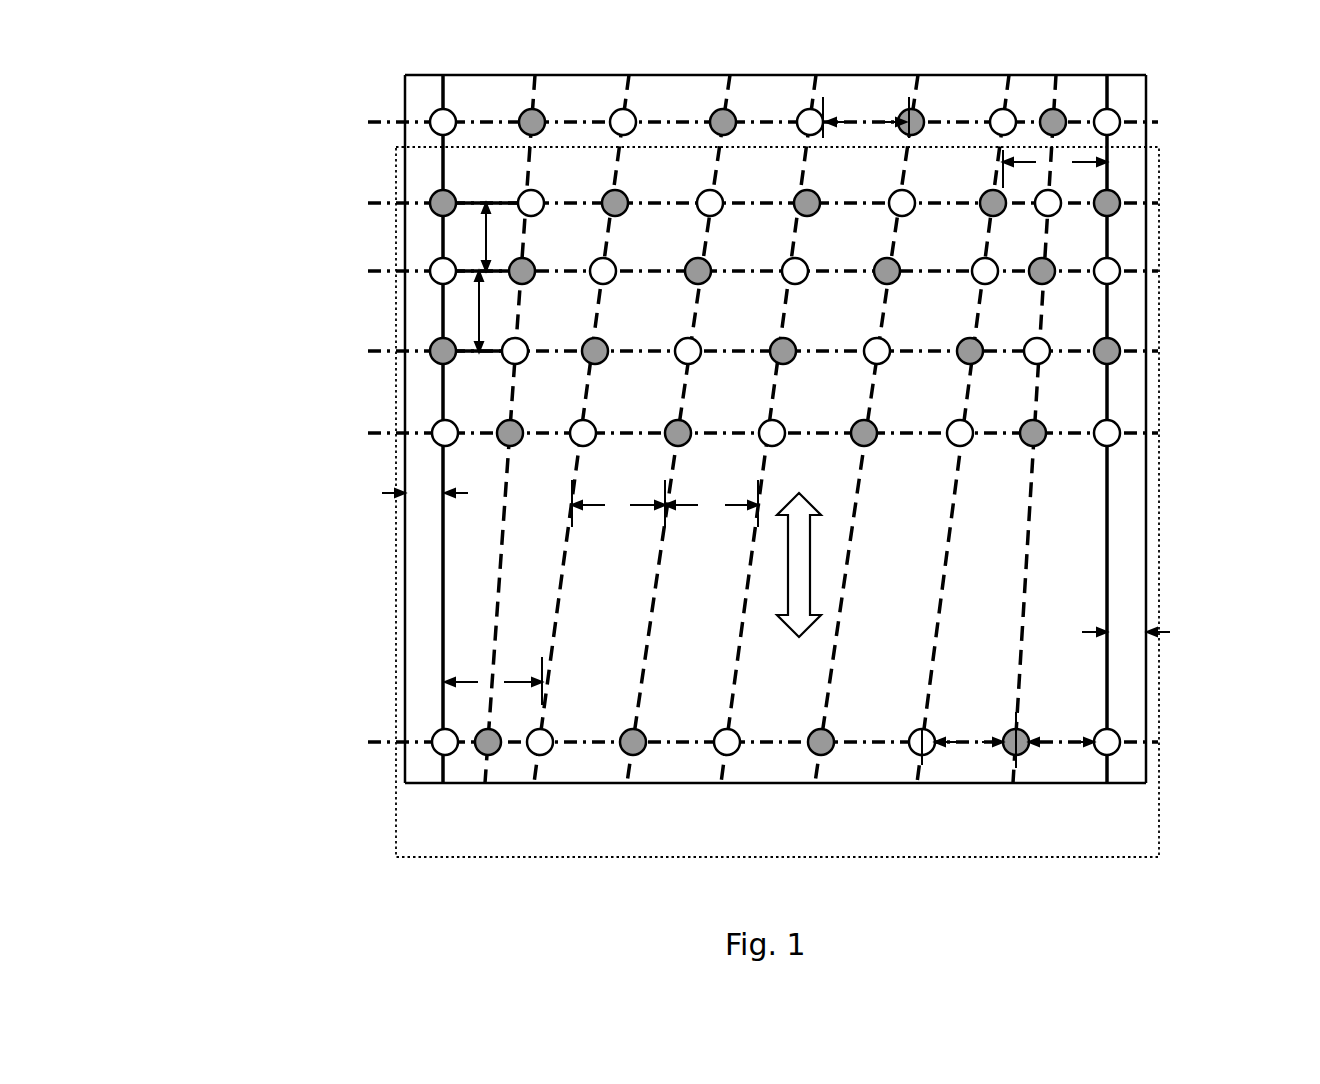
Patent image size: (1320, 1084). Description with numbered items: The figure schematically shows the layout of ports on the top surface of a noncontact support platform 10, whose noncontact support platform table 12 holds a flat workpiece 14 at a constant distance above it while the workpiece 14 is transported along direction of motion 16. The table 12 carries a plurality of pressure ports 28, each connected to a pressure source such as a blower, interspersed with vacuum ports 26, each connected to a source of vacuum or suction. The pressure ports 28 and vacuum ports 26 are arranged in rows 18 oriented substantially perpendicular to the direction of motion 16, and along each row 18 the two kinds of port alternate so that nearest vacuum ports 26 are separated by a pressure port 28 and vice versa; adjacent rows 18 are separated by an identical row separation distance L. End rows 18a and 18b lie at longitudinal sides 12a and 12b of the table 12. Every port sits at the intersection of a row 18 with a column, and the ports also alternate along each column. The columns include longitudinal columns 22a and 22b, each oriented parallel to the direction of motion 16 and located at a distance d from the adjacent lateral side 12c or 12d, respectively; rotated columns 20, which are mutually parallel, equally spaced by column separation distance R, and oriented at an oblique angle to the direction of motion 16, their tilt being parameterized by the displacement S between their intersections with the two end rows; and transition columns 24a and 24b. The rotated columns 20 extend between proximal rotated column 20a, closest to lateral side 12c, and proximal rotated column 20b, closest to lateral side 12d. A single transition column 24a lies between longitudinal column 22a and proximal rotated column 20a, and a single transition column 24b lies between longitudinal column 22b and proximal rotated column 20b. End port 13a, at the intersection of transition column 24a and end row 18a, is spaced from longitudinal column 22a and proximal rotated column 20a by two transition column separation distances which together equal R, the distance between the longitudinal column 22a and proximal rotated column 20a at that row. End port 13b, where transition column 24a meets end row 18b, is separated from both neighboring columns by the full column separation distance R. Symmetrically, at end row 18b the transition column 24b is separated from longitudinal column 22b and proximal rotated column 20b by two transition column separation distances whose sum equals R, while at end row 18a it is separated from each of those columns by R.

The noncontact support platform 10 is at (230, 397).
The noncontact support platform table 12 is at (791, 451).
The longitudinal side 12a is at (1083, 75).
The longitudinal side 12b is at (862, 784).
The lateral side 12c is at (1146, 233).
The lateral side 12d is at (443, 318).
The end port 13a is at (1050, 110).
The end port 13b is at (1020, 750).
The workpiece 14 is at (398, 560).
The direction of motion 16 is at (810, 540).
The rows 18 is at (392, 272).
The end row 18a is at (397, 122).
The end row 18b is at (393, 742).
The rotated columns 20 is at (816, 780).
The proximal rotated column 20a is at (930, 664).
The proximal rotated column 20b is at (560, 612).
The longitudinal column 22a is at (1107, 318).
The longitudinal column 22b is at (445, 655).
The transition column 24a is at (1033, 522).
The transition column 24b is at (500, 609).
The vacuum ports 26 is at (500, 428).
The pressure ports 28 is at (1120, 428).